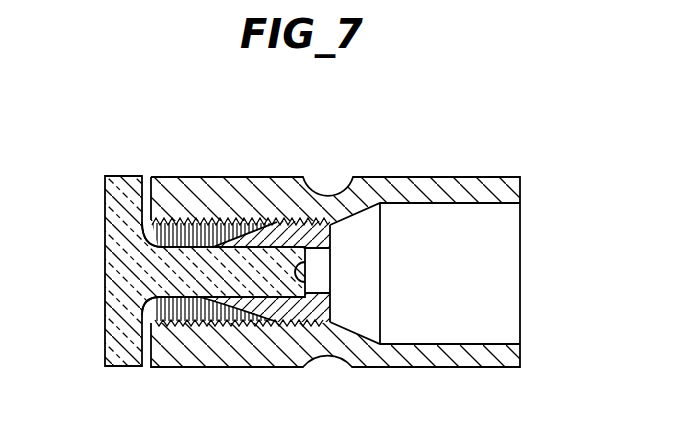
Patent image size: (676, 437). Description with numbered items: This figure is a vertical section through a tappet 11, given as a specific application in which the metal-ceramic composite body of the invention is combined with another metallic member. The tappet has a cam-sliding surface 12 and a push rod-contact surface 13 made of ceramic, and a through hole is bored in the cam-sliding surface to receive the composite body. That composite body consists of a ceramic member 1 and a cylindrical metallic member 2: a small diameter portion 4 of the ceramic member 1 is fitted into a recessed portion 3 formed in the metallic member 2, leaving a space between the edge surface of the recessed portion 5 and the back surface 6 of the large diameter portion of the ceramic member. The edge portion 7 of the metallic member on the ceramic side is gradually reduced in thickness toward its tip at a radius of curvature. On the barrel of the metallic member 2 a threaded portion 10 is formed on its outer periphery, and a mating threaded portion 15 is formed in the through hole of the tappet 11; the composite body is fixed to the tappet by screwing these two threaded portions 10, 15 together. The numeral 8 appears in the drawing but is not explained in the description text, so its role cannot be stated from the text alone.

The ceramic member 1 is at (110, 229).
The metallic member 2 is at (320, 352).
The recessed portion 3 is at (327, 260).
The small diameter portion 4 is at (275, 322).
The edge surface of the recessed portion 5 is at (197, 323).
The back surface of the large diameter portion 6 is at (148, 366).
The edge portion of the metallic member 7 is at (226, 322).
The external thread 8 is at (152, 222).
The threaded portion 10 is at (283, 220).
The tappet 11 is at (370, 190).
The cam-sliding surface 12 is at (105, 287).
The push rod-contact surface 13 is at (307, 272).
The threaded portion 15 is at (295, 222).